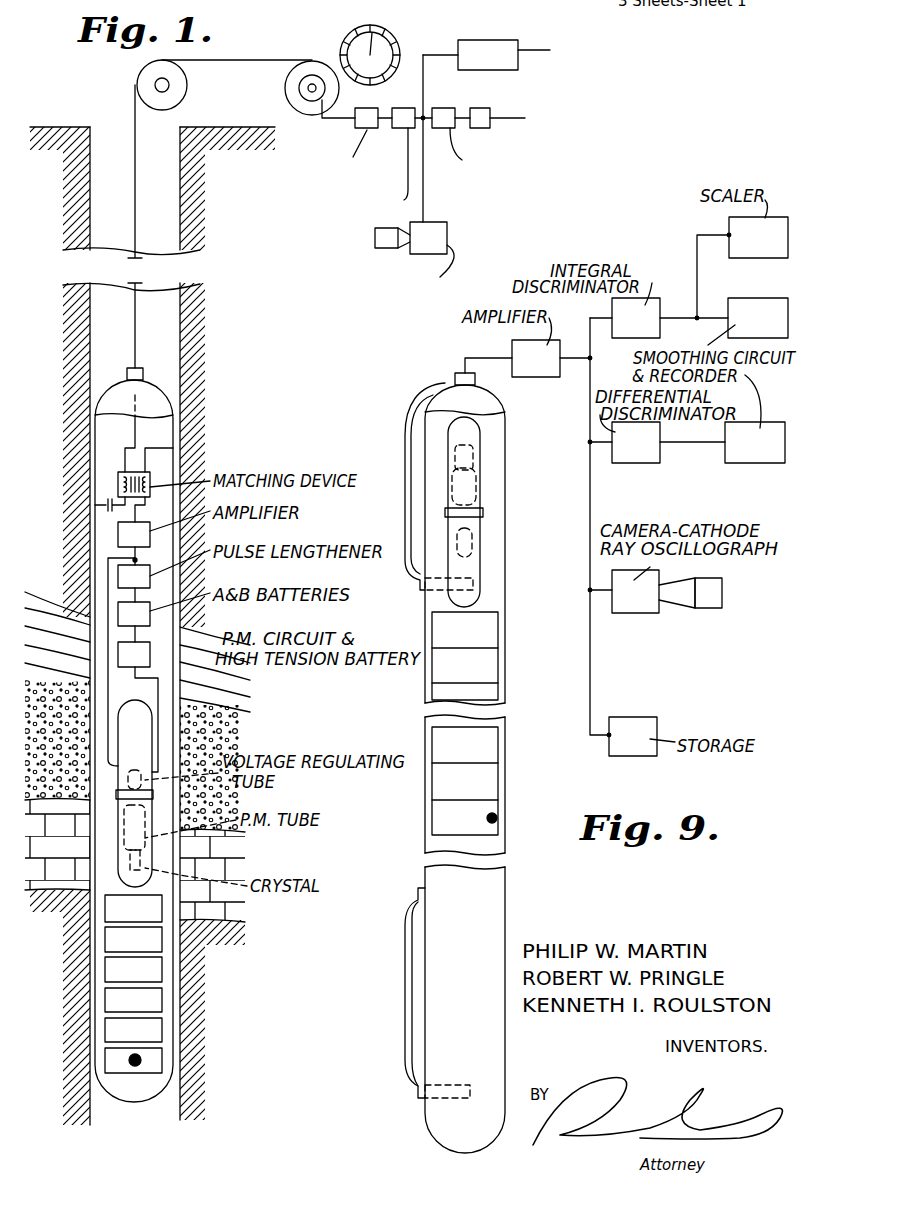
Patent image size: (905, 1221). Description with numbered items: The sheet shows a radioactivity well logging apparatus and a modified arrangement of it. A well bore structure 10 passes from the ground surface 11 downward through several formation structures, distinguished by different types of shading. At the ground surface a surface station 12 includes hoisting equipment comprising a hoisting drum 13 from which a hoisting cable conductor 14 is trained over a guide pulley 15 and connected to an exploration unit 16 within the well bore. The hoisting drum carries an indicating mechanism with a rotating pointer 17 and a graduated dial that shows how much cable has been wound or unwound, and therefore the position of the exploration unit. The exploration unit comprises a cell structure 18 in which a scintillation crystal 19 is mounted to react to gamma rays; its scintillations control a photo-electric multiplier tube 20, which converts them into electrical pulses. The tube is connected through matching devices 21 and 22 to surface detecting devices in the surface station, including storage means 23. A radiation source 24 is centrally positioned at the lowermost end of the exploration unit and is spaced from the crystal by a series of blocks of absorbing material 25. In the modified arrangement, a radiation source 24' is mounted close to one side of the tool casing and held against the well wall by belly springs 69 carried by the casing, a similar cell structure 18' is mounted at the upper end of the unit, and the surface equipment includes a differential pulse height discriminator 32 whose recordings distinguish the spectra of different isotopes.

In FIG. 1, the well bore structure 10 is at (90, 378).
In FIG. 1, the ground surface 11 is at (60, 126).
In FIG. 1, the surface station 12 is at (508, 97).
In FIG. 1, the hoisting drum 13 is at (308, 62).
In FIG. 1, the hoisting cable conductor 14 is at (135, 172).
In FIG. 1, the guide pulley 15 is at (140, 83).
In FIG. 1, the exploration unit 16 is at (92, 572).
In FIG. 1, the rotating pointer 17 is at (335, 73).
In FIG. 1, the cell structure 18 is at (105, 793).
In FIG. 9, the cell structure 18' is at (485, 512).
In FIG. 1, the scintillation crystal 19 is at (145, 858).
In FIG. 1, the photo-electric multiplier tube 20 is at (145, 821).
In FIG. 1, the matching device 21 is at (118, 484).
In FIG. 1, the matching device 22 is at (367, 112).
In FIG. 1, the storage means 23 is at (481, 63).
In FIG. 9, the storage means 23 is at (639, 748).
In FIG. 1, the radiation source 24 is at (171, 1064).
In FIG. 9, the radiation source 24' is at (522, 804).
In FIG. 1, the blocks of absorbing material 25 is at (168, 968).
In FIG. 9, the differential pulse height discriminator 32 is at (630, 457).
In FIG. 9, the belly springs 69 is at (405, 507).